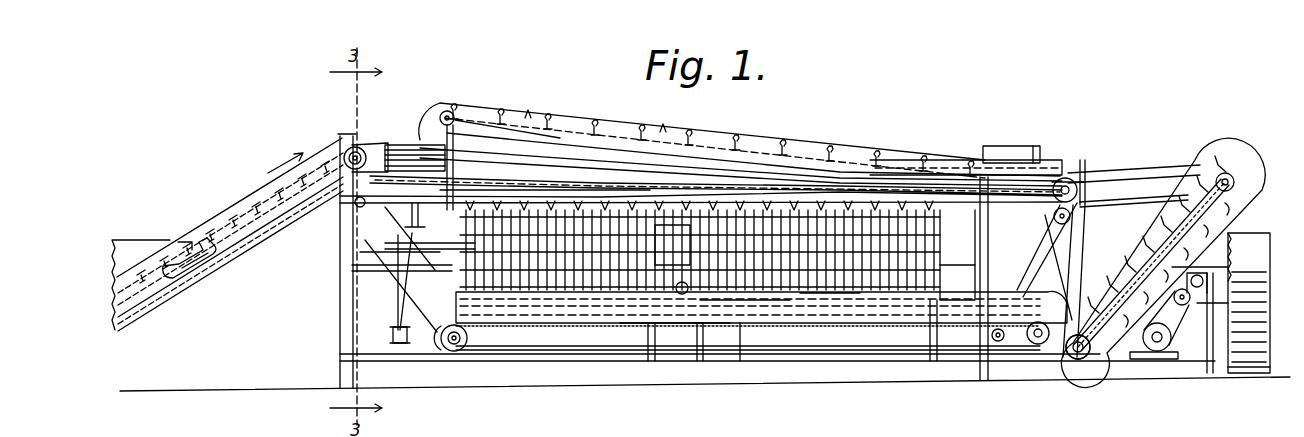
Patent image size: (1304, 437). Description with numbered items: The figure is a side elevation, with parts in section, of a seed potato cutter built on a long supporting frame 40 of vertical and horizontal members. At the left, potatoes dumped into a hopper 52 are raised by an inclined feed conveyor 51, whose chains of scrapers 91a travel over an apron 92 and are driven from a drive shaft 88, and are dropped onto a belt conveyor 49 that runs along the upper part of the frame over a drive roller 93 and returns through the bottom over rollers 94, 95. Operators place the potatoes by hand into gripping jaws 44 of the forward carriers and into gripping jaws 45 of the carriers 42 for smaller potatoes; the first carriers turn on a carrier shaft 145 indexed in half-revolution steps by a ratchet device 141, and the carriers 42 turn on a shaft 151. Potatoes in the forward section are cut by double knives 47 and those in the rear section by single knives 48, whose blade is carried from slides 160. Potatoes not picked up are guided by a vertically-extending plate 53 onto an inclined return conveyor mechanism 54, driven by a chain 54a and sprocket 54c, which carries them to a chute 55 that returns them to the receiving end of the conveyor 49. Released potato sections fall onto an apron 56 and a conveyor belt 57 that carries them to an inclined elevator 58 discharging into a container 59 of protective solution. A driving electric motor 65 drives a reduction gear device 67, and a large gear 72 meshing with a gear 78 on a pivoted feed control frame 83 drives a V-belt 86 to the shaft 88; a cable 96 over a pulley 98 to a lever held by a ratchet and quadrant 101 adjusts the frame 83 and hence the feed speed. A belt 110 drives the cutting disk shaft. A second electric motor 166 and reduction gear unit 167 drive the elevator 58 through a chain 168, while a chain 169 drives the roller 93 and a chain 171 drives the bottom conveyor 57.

The supporting frame 40 is at (342, 249).
The carriers 42 is at (830, 186).
The gripping jaws 44 is at (490, 215).
The gripping jaws 45 is at (740, 203).
The double knives 47 is at (628, 297).
The single knives 48 is at (838, 288).
The conveyor 49 is at (365, 264).
The inclined feed conveyor 51 is at (222, 226).
The hopper 52 is at (128, 252).
The vertically-extending plate 53 is at (1010, 147).
The inclined return conveyor mechanism 54 is at (800, 145).
The chain 54a is at (463, 215).
The sprocket 54c is at (451, 104).
The chute 55 is at (398, 143).
The apron 56 is at (765, 310).
The conveyor belt 57 is at (737, 323).
The inclined elevator 58 is at (1160, 235).
The container 59 is at (1250, 242).
The driving electric motor 65 is at (545, 301).
The reduction gear device 67 is at (545, 183).
The large gear 72 is at (422, 281).
The gear 78 is at (452, 282).
The feed control frame 83 is at (400, 252).
The V-belt 86 is at (355, 208).
The drive shaft 88 is at (348, 148).
The chains of scrapers 91a is at (195, 252).
The apron 92 is at (198, 270).
The drive roller 93 is at (1070, 180).
The roller 94 is at (985, 335).
The roller 95 is at (441, 352).
The cable 96 is at (398, 297).
The pulley 98 is at (393, 346).
The ratchet and quadrant 101 is at (395, 219).
The belt 110 is at (680, 297).
The ratchet device 141 is at (660, 332).
The carrier shaft 145 is at (672, 235).
The shaft 151 is at (957, 255).
The slides 160 is at (706, 332).
The second electric motor 166 is at (1190, 360).
The reduction gear unit 167 is at (1188, 306).
The chain 168 is at (1249, 305).
The chain 169 is at (1140, 162).
The chain 171 is at (1072, 362).